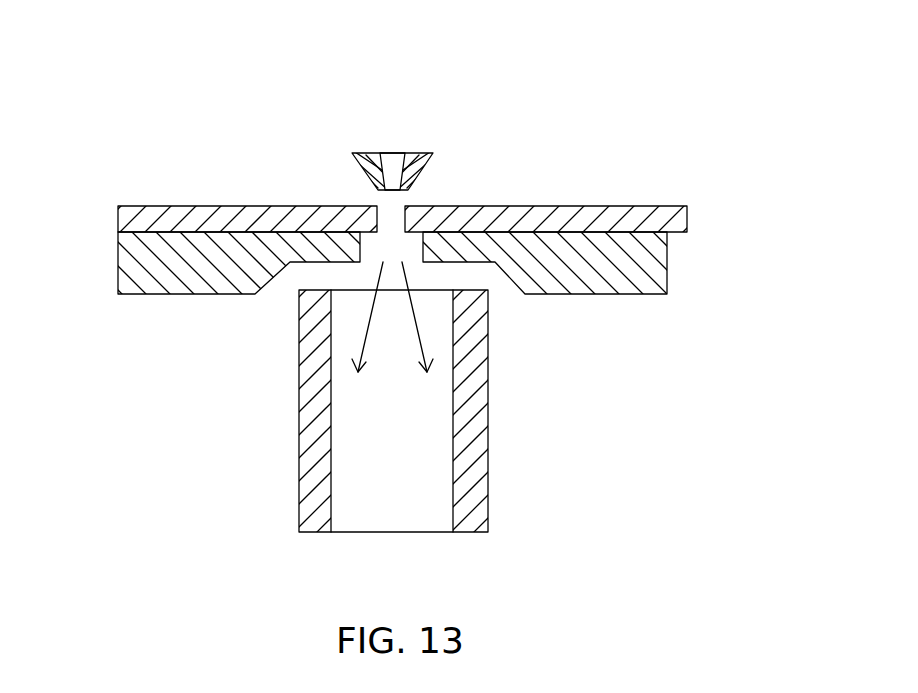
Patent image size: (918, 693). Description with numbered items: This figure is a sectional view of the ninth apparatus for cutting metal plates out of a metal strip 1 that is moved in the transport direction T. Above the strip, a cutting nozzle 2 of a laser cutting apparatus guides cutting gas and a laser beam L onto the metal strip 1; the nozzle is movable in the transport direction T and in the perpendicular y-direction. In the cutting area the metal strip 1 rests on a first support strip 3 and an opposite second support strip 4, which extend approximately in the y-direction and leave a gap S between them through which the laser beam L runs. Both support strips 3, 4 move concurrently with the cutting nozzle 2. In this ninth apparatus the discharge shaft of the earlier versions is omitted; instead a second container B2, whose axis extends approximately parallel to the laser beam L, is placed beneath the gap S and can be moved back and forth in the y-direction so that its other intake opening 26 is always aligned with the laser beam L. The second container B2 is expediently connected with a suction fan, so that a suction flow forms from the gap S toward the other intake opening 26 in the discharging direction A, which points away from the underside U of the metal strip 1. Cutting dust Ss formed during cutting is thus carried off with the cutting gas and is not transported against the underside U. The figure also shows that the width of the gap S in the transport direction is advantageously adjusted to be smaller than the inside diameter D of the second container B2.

The metal strip 1 is at (613, 216).
The cutting nozzle 2 is at (432, 153).
The first support strip 3 is at (158, 272).
The second support strip 4 is at (637, 255).
The other intake opening 26 is at (454, 409).
The second container B2 is at (473, 488).
The gap S is at (398, 257).
The cutting dust Ss is at (423, 352).
The laser beam L is at (392, 262).
The discharging direction A is at (392, 262).
The inside diameter D is at (453, 537).
The transport direction T is at (790, 131).
The underside U is at (678, 233).